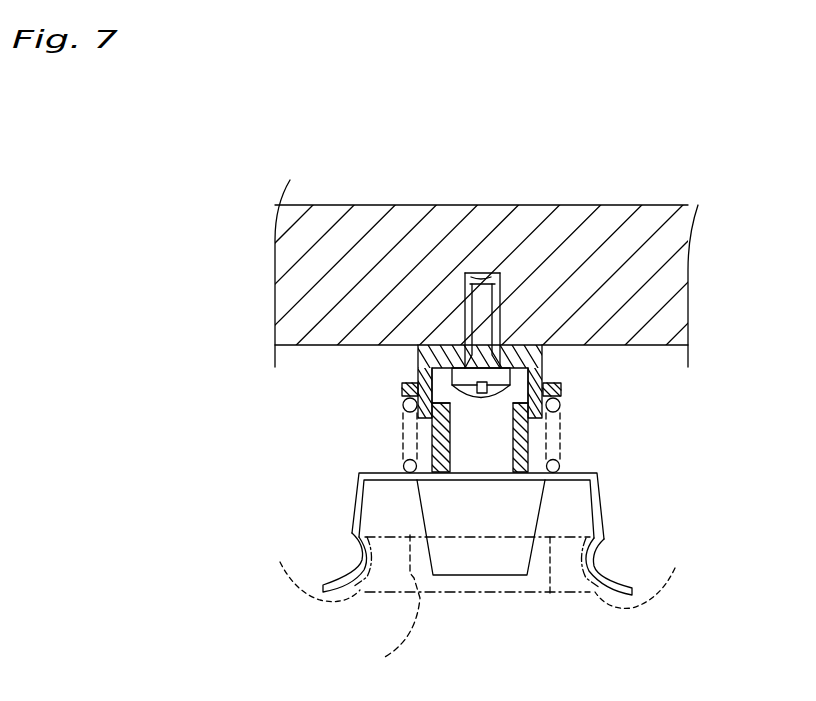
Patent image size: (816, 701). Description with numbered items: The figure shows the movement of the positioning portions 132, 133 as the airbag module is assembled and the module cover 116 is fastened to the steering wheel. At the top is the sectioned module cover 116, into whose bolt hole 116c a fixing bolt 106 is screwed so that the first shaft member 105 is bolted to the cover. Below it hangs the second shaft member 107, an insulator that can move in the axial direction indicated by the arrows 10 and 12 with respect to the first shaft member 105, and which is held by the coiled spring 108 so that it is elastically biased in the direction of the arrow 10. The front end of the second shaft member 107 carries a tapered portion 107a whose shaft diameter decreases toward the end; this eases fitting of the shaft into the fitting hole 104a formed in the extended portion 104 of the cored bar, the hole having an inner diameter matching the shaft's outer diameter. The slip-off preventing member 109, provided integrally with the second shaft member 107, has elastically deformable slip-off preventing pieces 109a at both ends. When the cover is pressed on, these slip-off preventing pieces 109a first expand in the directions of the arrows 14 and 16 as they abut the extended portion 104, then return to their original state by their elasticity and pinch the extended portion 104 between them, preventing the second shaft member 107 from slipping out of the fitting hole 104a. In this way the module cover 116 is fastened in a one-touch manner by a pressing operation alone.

The module cover 116 is at (528, 213).
The bolt hole 116c is at (465, 275).
The first shaft member 105 is at (414, 361).
The fixing bolt 106 is at (510, 381).
The second shaft member 107 is at (536, 433).
The tapered portion 107a is at (532, 562).
The coiled spring 108 is at (396, 427).
The slip-off preventing member 109 is at (352, 471).
The slip-off preventing pieces 109a is at (348, 578).
The extended portion 104 is at (586, 604).
The fitting hole 104a is at (383, 658).
The positioning portion 132 is at (465, 629).
The positioning portion 133 is at (477, 592).
The arrow 12 is at (663, 395).
The arrow 10 is at (663, 438).
The arrow 14 is at (690, 617).
The arrow 16 is at (295, 610).